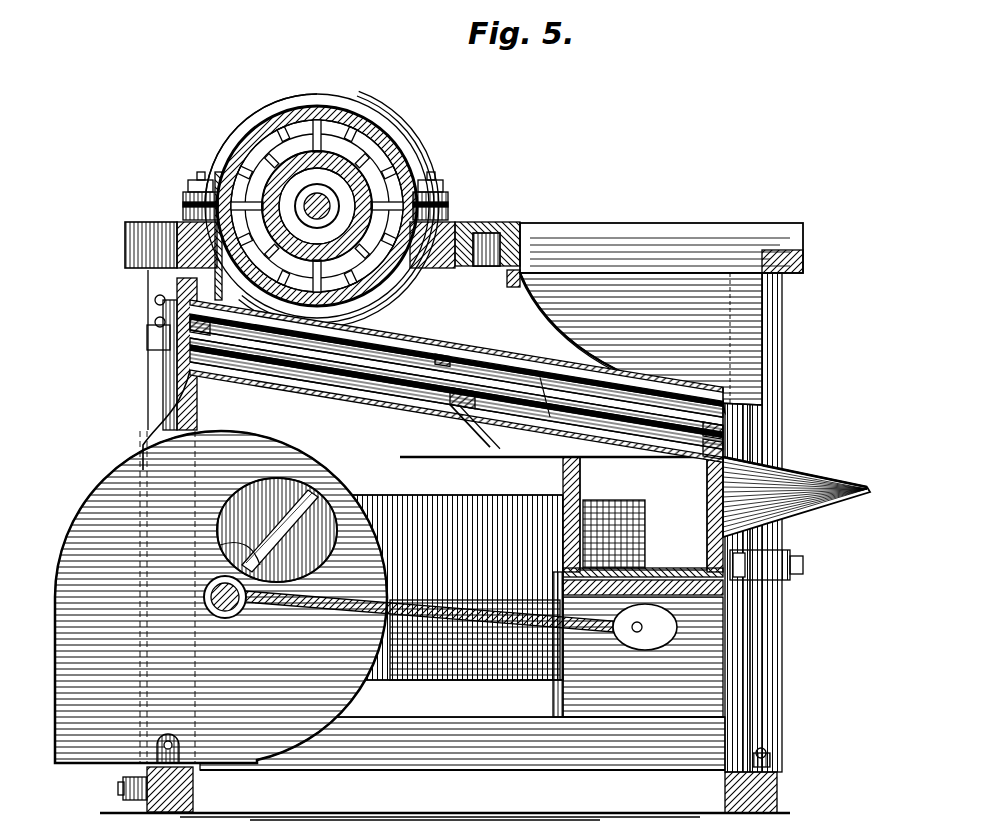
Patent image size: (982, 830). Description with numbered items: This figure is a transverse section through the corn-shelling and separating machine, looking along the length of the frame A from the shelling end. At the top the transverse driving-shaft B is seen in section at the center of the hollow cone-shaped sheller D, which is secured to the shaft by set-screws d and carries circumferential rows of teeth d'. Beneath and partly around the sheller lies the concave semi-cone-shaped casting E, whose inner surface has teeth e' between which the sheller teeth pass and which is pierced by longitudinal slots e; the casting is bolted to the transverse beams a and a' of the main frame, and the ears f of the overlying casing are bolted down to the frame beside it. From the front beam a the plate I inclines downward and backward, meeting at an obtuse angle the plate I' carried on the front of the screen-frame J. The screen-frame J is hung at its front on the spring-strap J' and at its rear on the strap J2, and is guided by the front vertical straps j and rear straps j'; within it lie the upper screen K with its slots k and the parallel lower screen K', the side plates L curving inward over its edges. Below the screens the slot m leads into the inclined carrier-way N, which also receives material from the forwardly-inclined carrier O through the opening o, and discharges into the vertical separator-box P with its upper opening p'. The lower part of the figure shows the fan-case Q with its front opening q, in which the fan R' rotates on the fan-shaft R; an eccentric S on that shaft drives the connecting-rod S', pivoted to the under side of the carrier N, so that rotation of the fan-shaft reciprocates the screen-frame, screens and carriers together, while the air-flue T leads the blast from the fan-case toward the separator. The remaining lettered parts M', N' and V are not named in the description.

The frame A is at (733, 213).
The driving-shaft B is at (319, 195).
The corn-sheller D is at (317, 185).
The set-screws d is at (298, 205).
The teeth d' is at (317, 160).
The concave semi-cone-shaped casting E is at (262, 106).
The longitudinal slots e is at (329, 206).
The teeth e' is at (471, 224).
The front transverse beam a is at (311, 229).
The transverse beam a' is at (515, 240).
The ears f is at (190, 200).
The plate I is at (158, 301).
The plate I' is at (143, 541).
The screen-frame J is at (456, 415).
The transverse spring-strap J' is at (133, 322).
The strap J2 is at (790, 562).
The front vertical metal straps j is at (151, 412).
The rear straps j' is at (782, 698).
The upper screen K is at (456, 408).
The lower screen K' is at (456, 429).
The slots k is at (556, 434).
The side plates L is at (641, 339).
The slide M' is at (456, 430).
The inclined carrier-way N is at (561, 526).
The lower box N' is at (638, 644).
The forwardly-inclined carrier O is at (796, 497).
The opening o is at (695, 494).
The separator-box P is at (506, 470).
The upper opening p' is at (650, 471).
The fan-case Q is at (221, 597).
The front opening q is at (70, 685).
The fan-shaft R is at (208, 606).
The fan R' is at (277, 530).
The eccentric S is at (461, 620).
The connecting-rod S' is at (415, 580).
The air-flue T is at (406, 587).
The curved guide V is at (620, 383).
The slot m is at (604, 462).